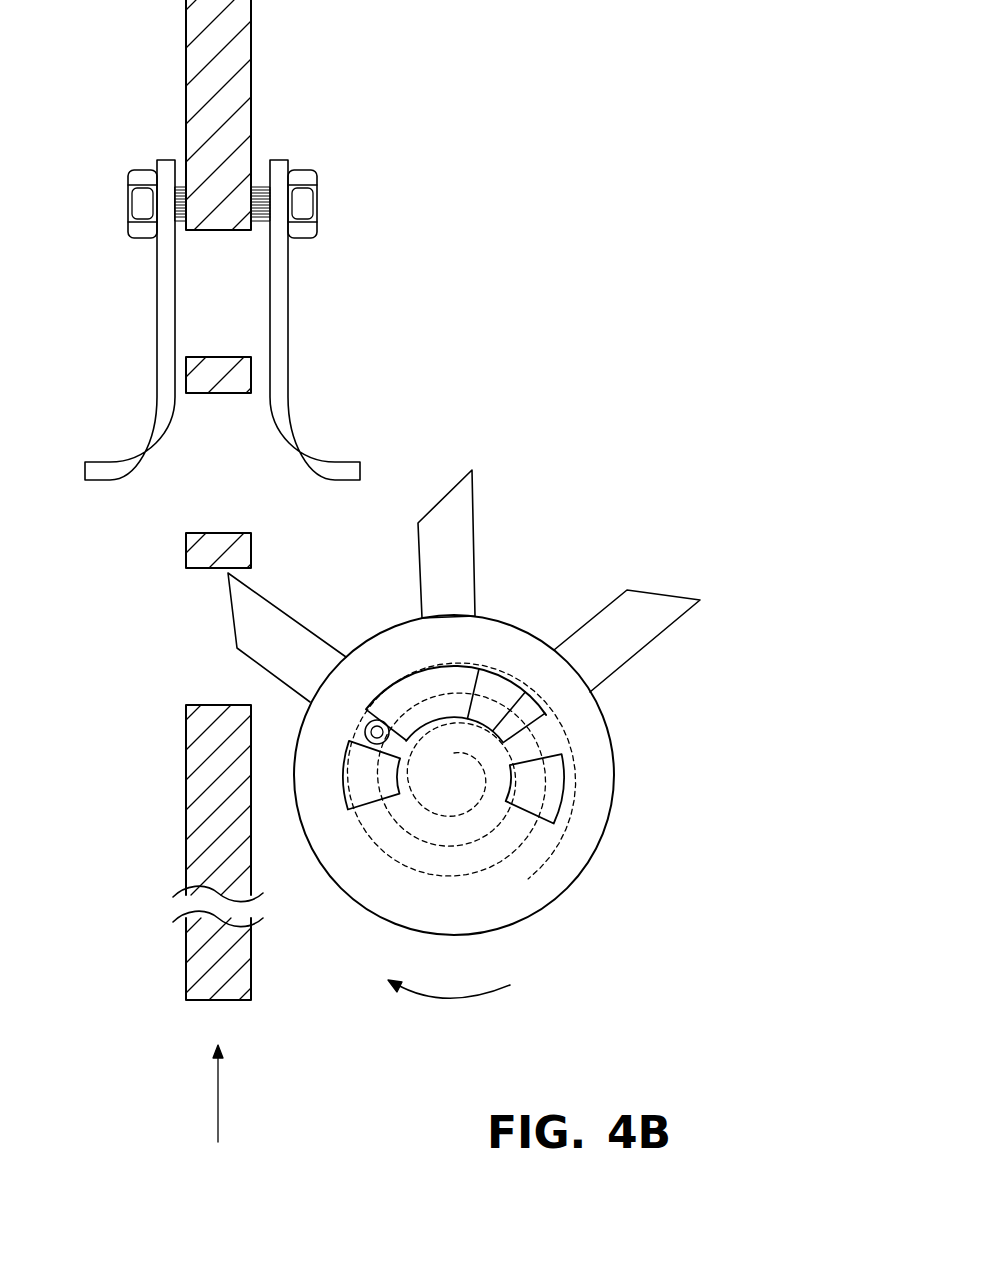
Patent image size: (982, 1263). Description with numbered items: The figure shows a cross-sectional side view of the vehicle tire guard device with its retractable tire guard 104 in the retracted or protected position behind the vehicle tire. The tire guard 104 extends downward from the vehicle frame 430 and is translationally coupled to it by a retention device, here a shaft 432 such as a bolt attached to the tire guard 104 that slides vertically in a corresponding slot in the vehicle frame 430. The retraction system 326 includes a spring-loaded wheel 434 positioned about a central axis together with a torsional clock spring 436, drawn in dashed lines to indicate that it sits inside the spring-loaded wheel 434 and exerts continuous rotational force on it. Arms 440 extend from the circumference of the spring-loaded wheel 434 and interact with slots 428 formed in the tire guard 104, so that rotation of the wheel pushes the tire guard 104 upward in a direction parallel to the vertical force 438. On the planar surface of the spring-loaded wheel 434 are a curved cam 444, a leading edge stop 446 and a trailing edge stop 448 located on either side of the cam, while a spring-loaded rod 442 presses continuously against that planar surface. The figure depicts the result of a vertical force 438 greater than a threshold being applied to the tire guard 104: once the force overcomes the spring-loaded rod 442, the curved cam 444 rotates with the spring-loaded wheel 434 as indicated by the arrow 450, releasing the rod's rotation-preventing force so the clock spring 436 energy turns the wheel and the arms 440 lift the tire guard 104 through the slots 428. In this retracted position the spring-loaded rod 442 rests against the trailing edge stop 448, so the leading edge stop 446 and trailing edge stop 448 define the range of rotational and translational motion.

The tire guard 104 is at (190, 963).
The retraction system 326 is at (590, 579).
The slots 428 is at (202, 657).
The vehicle frame 430 is at (152, 250).
The shaft 432 is at (318, 204).
The spring-loaded wheel 434 is at (588, 863).
The clock spring 436 is at (518, 857).
The vertical force 438 is at (217, 1115).
The arms 440 is at (645, 627).
The spring-loaded rod 442 is at (378, 720).
The curved cam 444 is at (488, 683).
The leading edge stop 446 is at (558, 773).
The trailing edge stop 448 is at (368, 805).
The arrow 450 is at (455, 997).